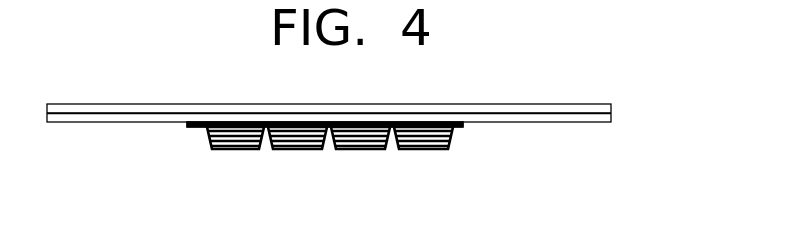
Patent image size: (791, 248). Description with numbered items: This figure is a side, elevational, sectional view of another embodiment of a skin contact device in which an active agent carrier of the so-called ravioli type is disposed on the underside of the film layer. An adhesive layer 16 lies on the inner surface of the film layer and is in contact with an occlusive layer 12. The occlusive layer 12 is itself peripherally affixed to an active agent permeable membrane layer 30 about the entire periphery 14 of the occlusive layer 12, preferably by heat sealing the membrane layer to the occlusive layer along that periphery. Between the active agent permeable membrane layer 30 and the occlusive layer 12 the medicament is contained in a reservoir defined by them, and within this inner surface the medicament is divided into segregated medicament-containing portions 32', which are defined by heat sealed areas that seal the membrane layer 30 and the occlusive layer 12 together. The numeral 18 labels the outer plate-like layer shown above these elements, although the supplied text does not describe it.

The occlusive layer 12 is at (460, 125).
The periphery 14 is at (187, 124).
The adhesive layer 16 is at (363, 118).
The cover plate 18 is at (471, 104).
The active agent permeable membrane layer 30 is at (428, 149).
The medicament-containing portions 32' is at (330, 164).